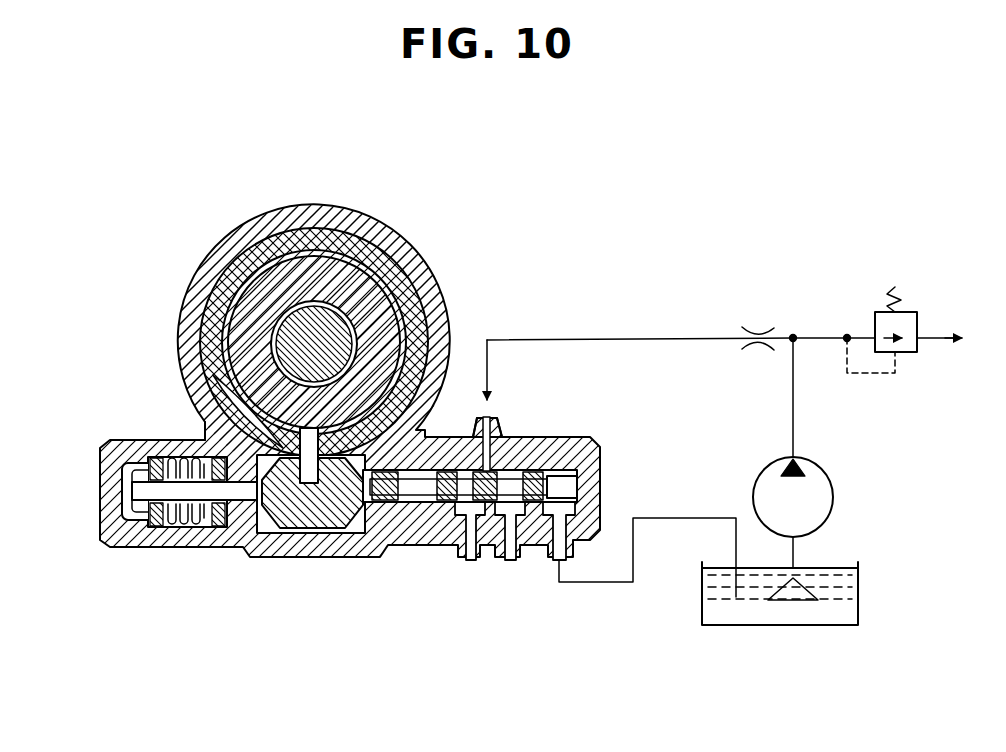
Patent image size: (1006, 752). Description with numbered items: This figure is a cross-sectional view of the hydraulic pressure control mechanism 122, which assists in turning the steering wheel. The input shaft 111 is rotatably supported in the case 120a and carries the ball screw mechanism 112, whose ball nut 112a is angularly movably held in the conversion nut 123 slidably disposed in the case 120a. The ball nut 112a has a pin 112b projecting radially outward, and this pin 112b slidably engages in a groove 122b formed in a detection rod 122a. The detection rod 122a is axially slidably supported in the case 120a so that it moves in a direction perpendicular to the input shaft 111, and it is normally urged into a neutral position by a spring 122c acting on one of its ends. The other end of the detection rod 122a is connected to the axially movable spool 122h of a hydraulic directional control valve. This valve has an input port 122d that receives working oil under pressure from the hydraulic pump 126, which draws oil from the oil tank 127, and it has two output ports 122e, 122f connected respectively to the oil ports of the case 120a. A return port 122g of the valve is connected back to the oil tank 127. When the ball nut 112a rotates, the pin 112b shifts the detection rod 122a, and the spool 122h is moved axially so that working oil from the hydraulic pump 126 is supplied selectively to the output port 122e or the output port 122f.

The input shaft 111 is at (432, 260).
The ball screw mechanism 112 is at (300, 300).
The ball nut 112a is at (255, 317).
The pin 112b is at (200, 405).
The case 120a is at (353, 220).
The conversion nut 123 is at (233, 258).
The hydraulic pressure control mechanism 122 is at (380, 657).
The detection rod 122a is at (277, 535).
The groove 122b is at (331, 532).
The spring 122c is at (179, 530).
The input port 122d is at (489, 418).
The output port 122e is at (467, 562).
The output port 122f is at (509, 560).
The return port 122g is at (562, 562).
The spool 122h is at (580, 487).
The hydraulic pump 126 is at (830, 474).
The oil tank 127 is at (860, 590).